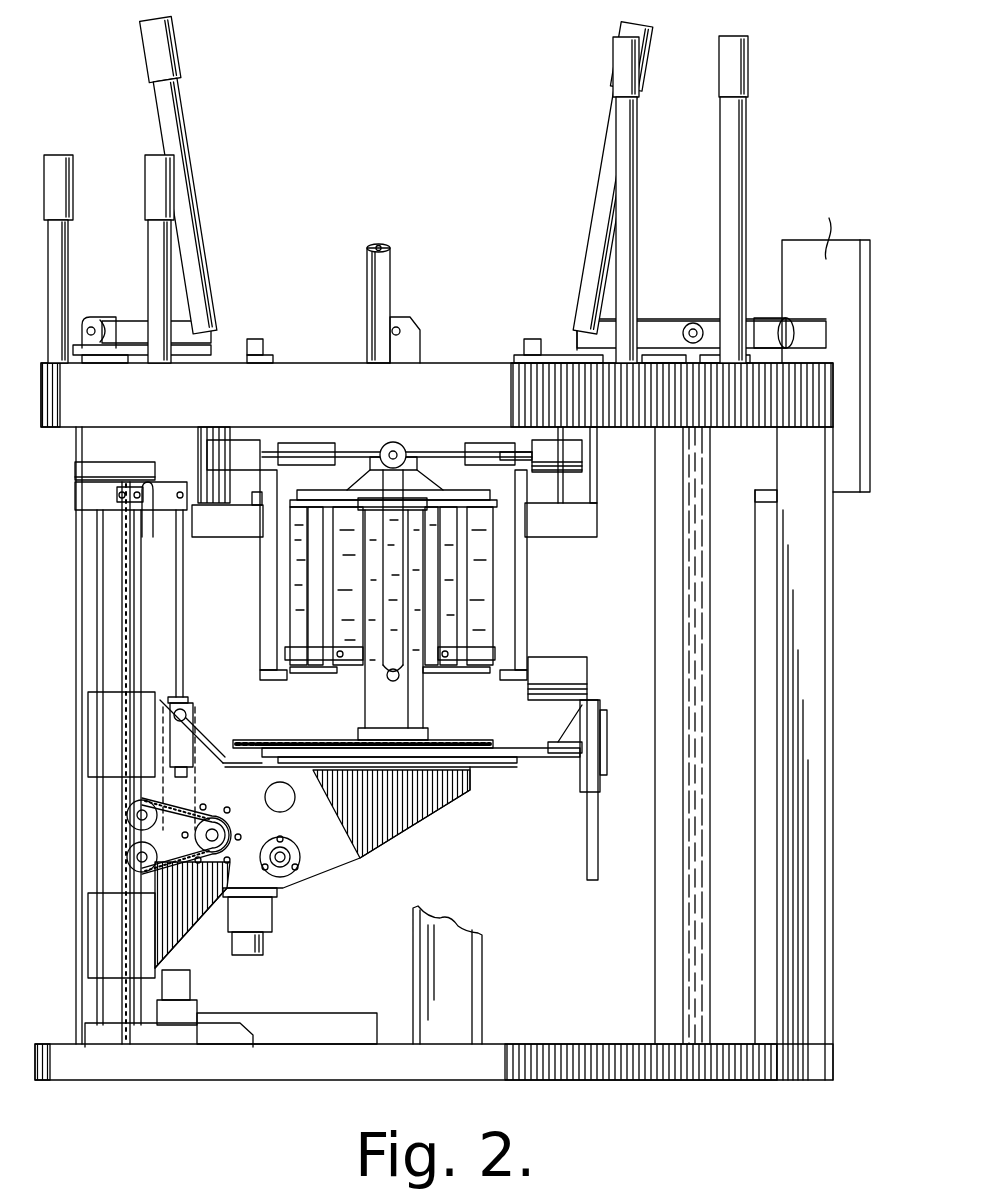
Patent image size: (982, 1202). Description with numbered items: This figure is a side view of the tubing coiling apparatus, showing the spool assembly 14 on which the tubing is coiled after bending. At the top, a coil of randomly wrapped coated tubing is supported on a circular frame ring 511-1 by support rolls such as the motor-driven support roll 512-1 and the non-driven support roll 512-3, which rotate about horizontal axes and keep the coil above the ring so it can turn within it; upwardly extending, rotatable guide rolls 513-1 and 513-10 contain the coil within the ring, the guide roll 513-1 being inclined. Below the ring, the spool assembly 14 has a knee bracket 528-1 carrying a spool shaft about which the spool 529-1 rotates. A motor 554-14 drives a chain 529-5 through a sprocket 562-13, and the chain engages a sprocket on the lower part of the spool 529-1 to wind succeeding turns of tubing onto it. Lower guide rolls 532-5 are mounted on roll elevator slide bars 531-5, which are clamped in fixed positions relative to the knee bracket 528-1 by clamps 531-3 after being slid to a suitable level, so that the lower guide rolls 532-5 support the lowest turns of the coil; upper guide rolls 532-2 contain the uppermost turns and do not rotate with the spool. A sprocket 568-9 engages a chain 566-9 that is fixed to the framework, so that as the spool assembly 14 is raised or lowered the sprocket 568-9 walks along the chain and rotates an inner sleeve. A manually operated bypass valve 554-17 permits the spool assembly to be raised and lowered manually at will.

The spool assembly 14 is at (458, 226).
The circular frame ring 511-1 is at (473, 385).
The support roll 512-1 is at (661, 321).
The support roll 512-3 is at (191, 322).
The guide roll 513-1 is at (734, 109).
The guide roll 513-10 is at (49, 244).
The knee bracket 528-1 is at (443, 797).
The spool 529-1 is at (352, 680).
The chain 529-5 is at (495, 717).
The clamp 531-3 is at (600, 770).
The roll elevator slide bar 531-5 is at (600, 697).
The upper guide roll 532-2 is at (563, 453).
The lower guide roll 532-5 is at (553, 668).
The motor 554-14 is at (263, 945).
The bypass valve 554-17 is at (170, 743).
The sprocket 562-13 is at (242, 757).
The chain 566-9 is at (120, 593).
The sprocket 568-9 is at (223, 828).